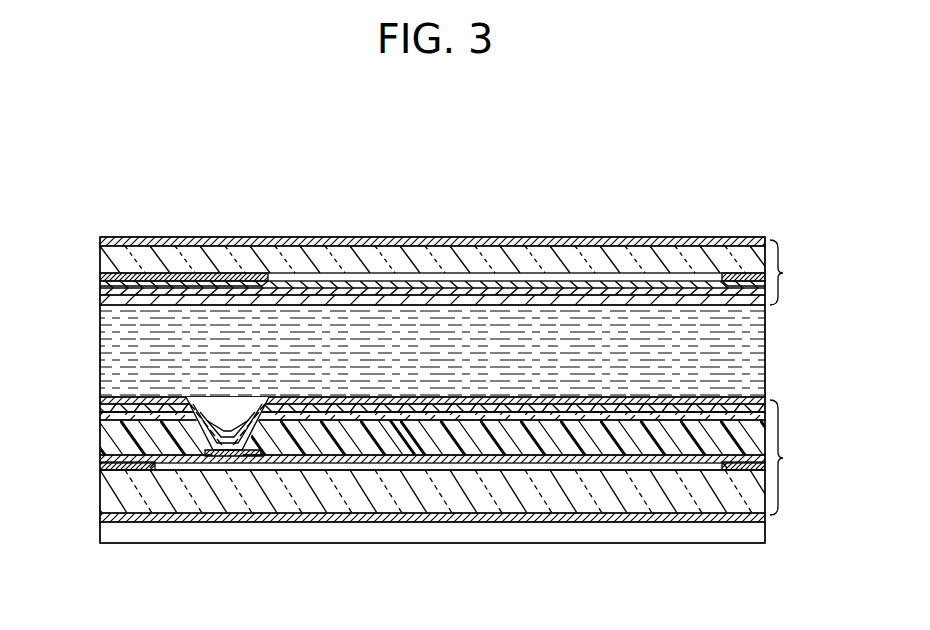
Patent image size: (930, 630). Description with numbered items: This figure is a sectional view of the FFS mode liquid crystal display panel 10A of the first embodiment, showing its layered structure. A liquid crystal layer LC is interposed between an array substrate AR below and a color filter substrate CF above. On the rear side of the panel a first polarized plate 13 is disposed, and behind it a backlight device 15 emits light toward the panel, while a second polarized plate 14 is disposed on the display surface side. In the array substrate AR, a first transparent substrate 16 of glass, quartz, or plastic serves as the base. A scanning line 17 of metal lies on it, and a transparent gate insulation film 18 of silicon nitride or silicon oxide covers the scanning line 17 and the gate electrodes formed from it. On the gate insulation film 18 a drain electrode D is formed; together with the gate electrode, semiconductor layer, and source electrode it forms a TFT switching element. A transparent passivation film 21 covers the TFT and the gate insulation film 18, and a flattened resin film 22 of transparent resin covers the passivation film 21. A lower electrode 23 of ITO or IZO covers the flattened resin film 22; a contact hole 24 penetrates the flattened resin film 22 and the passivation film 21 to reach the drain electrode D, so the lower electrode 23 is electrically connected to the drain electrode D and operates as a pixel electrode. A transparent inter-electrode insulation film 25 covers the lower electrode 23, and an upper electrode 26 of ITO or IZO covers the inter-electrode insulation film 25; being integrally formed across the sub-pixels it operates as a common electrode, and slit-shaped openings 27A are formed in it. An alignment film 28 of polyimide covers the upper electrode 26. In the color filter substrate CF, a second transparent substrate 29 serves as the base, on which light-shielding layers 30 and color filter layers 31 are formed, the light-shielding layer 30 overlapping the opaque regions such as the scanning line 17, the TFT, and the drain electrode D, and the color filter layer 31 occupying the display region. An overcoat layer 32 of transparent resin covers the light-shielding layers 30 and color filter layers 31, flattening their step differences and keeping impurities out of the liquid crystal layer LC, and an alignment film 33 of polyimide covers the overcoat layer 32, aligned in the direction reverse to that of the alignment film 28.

The liquid crystal display panel 10A is at (465, 92).
The first polarized plate 13 is at (632, 522).
The second polarized plate 14 is at (461, 240).
The backlight device 15 is at (487, 545).
The first transparent substrate 16 is at (588, 513).
The scanning line 17 is at (133, 472).
The gate insulation film 18 is at (372, 462).
The passivation film 21 is at (326, 462).
The flattened resin film 22 is at (672, 458).
The lower electrode 23 is at (413, 425).
The contact hole 24 is at (225, 410).
The inter-electrode insulation film 25 is at (108, 430).
The upper electrode 26 is at (100, 407).
The slit-shaped opening 27A is at (338, 397).
The alignment film 28 is at (148, 400).
The second transparent substrate 29 is at (392, 258).
The light-shielding layer 30 is at (162, 277).
The color filter layer 31 is at (345, 285).
The overcoat layer 32 is at (295, 298).
The alignment film 33 is at (238, 290).
The drain electrode D is at (224, 462).
The color filter substrate CF is at (792, 272).
The liquid crystal layer LC is at (757, 325).
The array substrate AR is at (793, 457).